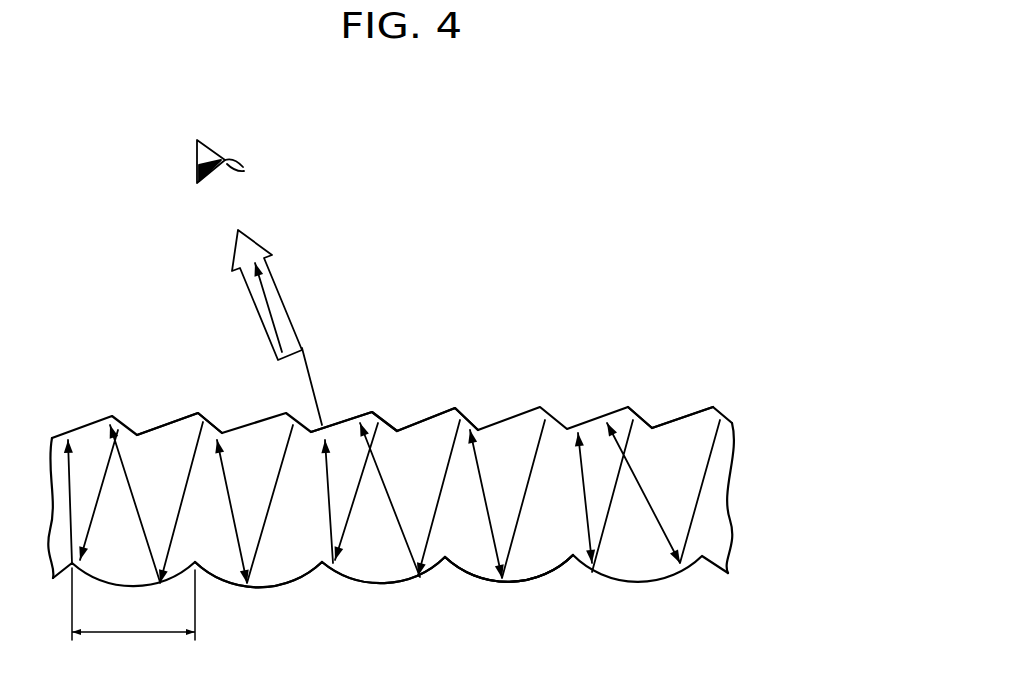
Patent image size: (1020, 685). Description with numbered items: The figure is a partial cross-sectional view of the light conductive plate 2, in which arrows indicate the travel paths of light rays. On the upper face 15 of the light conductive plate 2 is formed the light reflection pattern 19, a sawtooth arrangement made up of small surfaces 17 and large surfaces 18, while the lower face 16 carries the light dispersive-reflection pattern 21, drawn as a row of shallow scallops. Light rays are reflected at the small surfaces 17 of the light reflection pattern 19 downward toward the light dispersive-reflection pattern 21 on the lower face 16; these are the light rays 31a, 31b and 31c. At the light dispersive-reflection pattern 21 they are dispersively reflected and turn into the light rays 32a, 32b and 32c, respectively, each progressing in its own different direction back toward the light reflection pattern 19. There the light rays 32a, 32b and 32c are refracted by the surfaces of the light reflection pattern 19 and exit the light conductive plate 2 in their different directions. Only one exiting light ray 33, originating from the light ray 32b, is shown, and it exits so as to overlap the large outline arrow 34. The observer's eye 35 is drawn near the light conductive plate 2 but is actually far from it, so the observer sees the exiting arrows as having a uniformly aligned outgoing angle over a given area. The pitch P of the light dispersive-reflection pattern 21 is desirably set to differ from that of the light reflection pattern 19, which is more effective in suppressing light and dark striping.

The light conductive plate 2 is at (423, 452).
The upper face 15 is at (397, 358).
The lower face 16 is at (390, 587).
The small surfaces 17 is at (642, 415).
The large surfaces 18 is at (687, 413).
The light reflection pattern 19 is at (685, 338).
The light dispersive-reflection pattern 21 is at (546, 578).
The light ray 31a is at (442, 497).
The light ray 31b is at (353, 517).
The light ray 31c is at (267, 525).
The light ray 32a is at (380, 487).
The light ray 32b is at (327, 473).
The light ray 32c is at (227, 490).
The light ray 33 is at (270, 303).
The arrow 34 is at (306, 264).
The observer's eye 35 is at (195, 153).
The pitch P is at (133, 604).